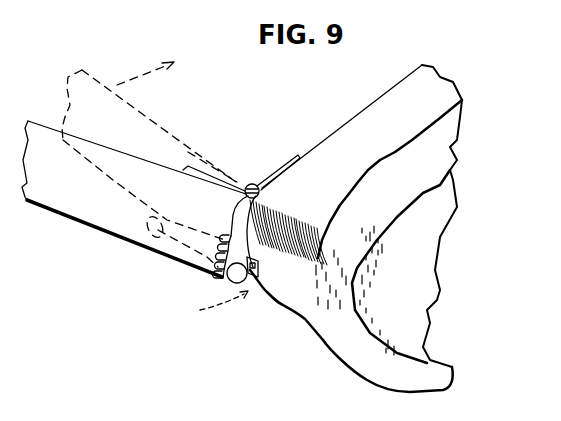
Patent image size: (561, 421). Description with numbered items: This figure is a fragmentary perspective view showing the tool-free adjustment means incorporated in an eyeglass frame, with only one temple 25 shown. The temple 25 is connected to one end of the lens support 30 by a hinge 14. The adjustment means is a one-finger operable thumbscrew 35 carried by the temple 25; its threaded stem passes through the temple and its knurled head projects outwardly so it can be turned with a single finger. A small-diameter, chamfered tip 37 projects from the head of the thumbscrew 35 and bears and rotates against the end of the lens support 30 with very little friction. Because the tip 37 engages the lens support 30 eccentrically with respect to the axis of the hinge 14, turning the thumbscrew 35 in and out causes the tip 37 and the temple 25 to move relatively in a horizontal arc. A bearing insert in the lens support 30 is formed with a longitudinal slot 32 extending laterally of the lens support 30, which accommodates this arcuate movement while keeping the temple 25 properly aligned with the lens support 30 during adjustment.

The hinge 14 is at (283, 158).
The temple 25 is at (83, 210).
The lens support 30 is at (353, 127).
The longitudinal slot 32 is at (259, 270).
The thumbscrew 35 is at (218, 252).
The tip 37 is at (220, 286).